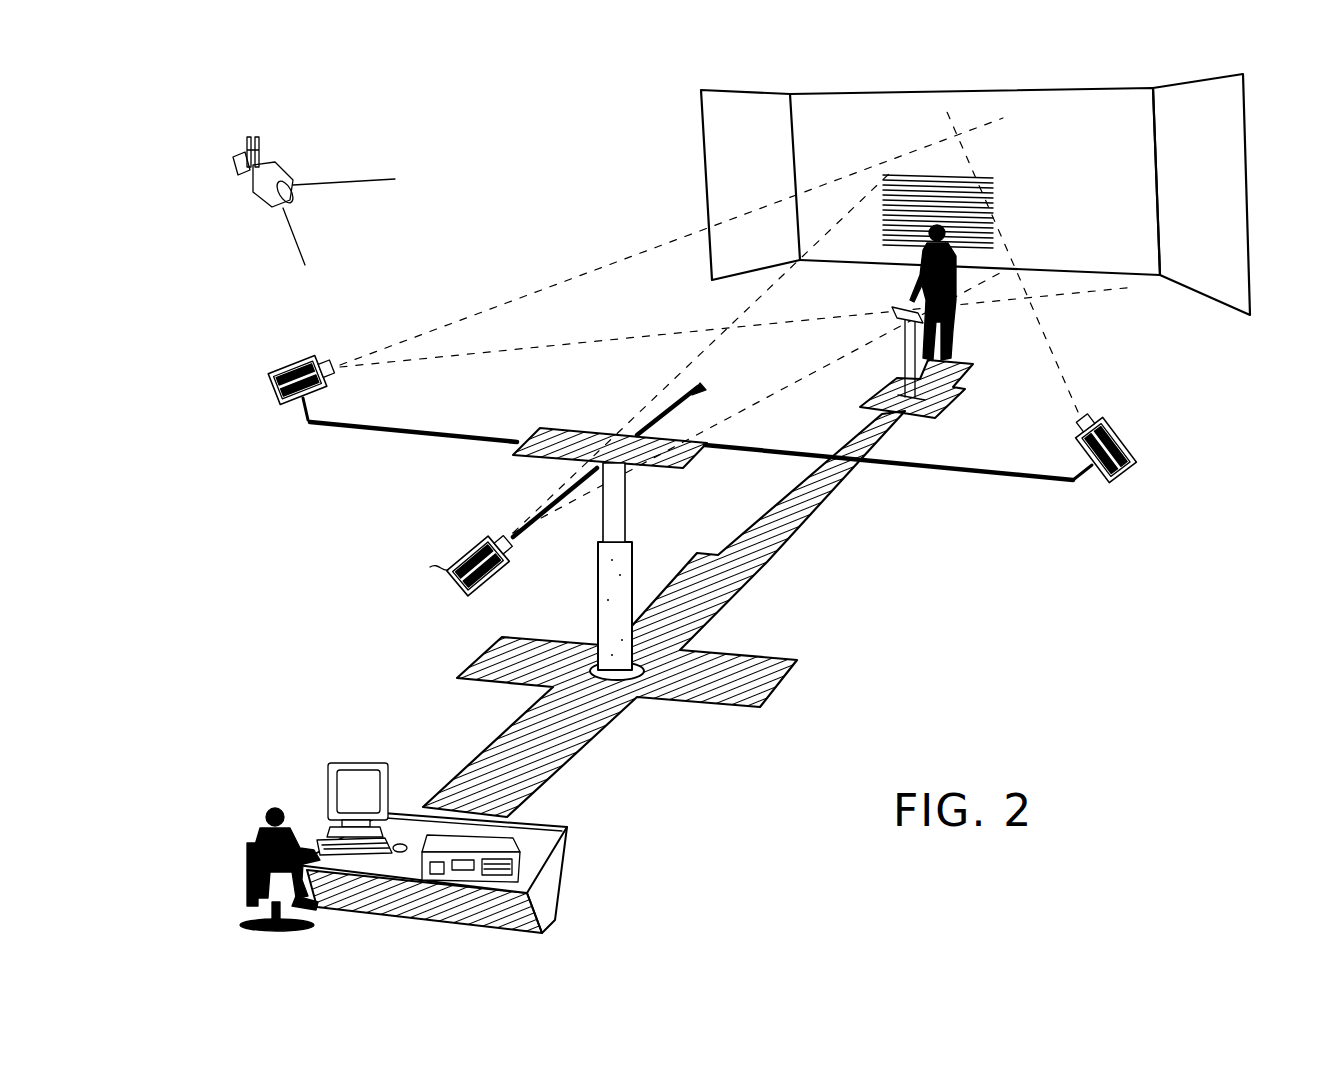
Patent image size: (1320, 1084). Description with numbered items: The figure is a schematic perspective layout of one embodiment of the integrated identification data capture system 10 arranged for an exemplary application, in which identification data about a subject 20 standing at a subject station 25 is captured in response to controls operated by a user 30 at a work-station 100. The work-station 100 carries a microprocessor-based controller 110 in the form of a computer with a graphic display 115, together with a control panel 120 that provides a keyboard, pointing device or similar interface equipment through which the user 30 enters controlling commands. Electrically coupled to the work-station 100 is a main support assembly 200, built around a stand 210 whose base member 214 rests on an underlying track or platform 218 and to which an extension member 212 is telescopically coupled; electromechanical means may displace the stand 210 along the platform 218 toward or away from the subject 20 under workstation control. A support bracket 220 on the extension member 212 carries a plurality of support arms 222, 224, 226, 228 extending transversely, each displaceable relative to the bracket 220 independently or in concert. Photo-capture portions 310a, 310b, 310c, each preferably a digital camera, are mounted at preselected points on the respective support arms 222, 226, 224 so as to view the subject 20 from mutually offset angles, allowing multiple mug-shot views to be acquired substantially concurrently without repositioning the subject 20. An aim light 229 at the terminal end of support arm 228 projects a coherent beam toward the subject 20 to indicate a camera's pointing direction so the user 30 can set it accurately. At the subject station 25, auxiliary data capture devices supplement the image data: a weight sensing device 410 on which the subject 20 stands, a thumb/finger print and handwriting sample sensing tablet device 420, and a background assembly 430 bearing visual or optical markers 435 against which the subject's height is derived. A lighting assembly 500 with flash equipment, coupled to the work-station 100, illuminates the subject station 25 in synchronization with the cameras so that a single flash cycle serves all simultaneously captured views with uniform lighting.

The integrated identification data capture system 10 is at (593, 124).
The subject 20 is at (957, 263).
The subject station 25 is at (995, 331).
The user 30 is at (260, 828).
The work-station 100 is at (596, 848).
The microprocessor-based controller 110 is at (377, 763).
The display screen 115 is at (350, 793).
The control panel 120 is at (510, 850).
The main support assembly 200 is at (675, 530).
The stand 210 is at (607, 567).
The extension member 212 is at (617, 503).
The base member 214 is at (612, 623).
The platform 218 is at (755, 658).
The support bracket 220 is at (565, 443).
The support arm 222 is at (383, 433).
The support arm 224 is at (968, 477).
The support arm 226 is at (543, 510).
The support arm 228 is at (672, 411).
The aim light 229 is at (706, 388).
The photo-capture portion 310a is at (283, 370).
The photo-capture portion 310b is at (448, 570).
The photo-capture portion 310c is at (1125, 442).
The weight sensing device 410 is at (967, 365).
The thumb/finger print and handwriting sample sensing tablet device 420 is at (893, 313).
The background assembly 430 is at (1130, 265).
The visual or optical markers 435 is at (983, 178).
The lighting assembly 500 is at (280, 150).